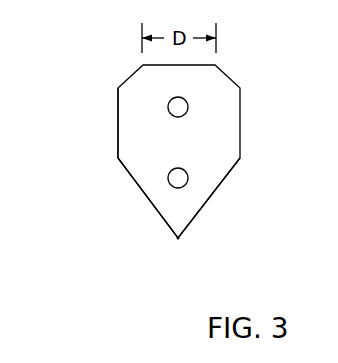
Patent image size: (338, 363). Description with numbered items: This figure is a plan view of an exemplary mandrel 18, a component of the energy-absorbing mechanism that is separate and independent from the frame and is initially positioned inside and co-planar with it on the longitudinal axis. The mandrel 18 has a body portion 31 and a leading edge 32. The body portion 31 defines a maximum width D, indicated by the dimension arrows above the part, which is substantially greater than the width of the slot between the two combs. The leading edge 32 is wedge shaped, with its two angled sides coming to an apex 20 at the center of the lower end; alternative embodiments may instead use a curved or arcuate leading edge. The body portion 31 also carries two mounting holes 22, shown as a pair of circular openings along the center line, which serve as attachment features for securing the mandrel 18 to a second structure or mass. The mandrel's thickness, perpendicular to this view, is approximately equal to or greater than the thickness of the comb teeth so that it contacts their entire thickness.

The mandrel 18 is at (276, 60).
The apex 20 is at (178, 238).
The mounting holes 22 is at (187, 175).
The body portion 31 is at (118, 123).
The leading edge 32 is at (145, 196).